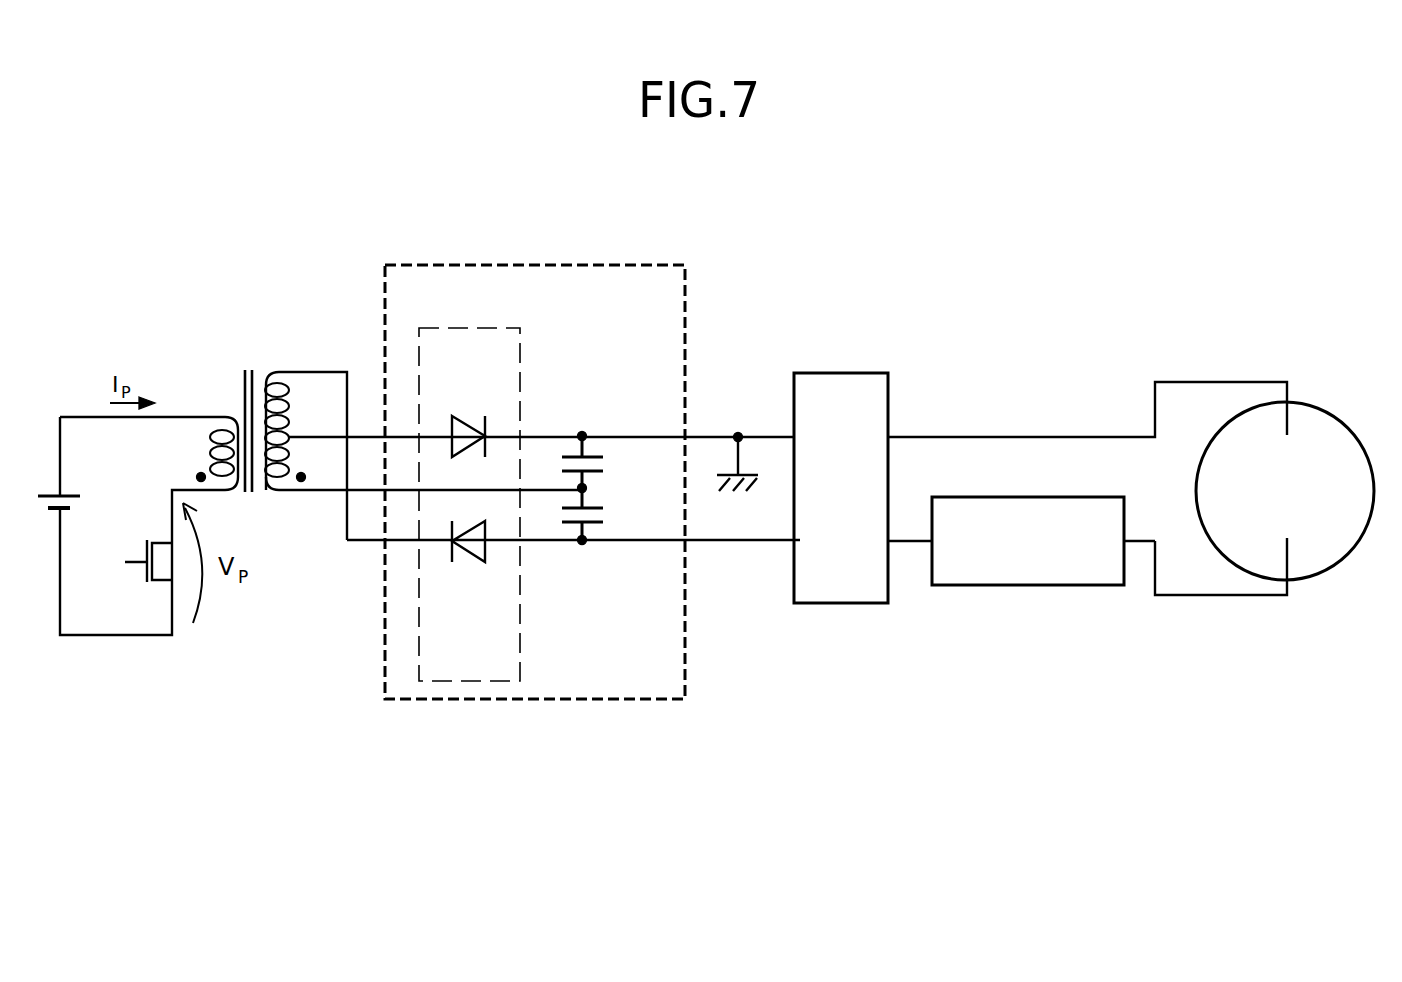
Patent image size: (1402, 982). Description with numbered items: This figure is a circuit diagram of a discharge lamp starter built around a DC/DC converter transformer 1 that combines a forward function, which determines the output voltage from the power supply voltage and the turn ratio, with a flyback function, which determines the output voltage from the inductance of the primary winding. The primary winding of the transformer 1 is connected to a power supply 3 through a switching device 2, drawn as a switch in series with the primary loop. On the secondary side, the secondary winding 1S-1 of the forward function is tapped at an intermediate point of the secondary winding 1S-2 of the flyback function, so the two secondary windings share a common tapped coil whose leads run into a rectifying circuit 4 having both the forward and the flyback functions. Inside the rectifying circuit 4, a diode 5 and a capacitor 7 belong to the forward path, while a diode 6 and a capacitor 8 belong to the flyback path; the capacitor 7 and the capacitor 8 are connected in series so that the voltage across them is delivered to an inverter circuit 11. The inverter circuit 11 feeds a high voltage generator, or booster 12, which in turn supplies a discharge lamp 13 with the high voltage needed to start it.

The DC/DC converter transformer 1 is at (250, 372).
The secondary winding of the forward function 1S-1 is at (277, 492).
The secondary winding of the flyback function 1S-2 is at (282, 380).
The switching device 2 is at (133, 582).
The power supply 3 is at (45, 491).
The rectifying circuit 4 is at (552, 265).
The diode 5 is at (468, 429).
The diode 6 is at (468, 562).
The capacitor 7 is at (599, 462).
The capacitor 8 is at (599, 516).
The inverter circuit 11 is at (842, 373).
The high voltage generator (booster) 12 is at (1025, 586).
The discharge lamp 13 is at (1331, 412).